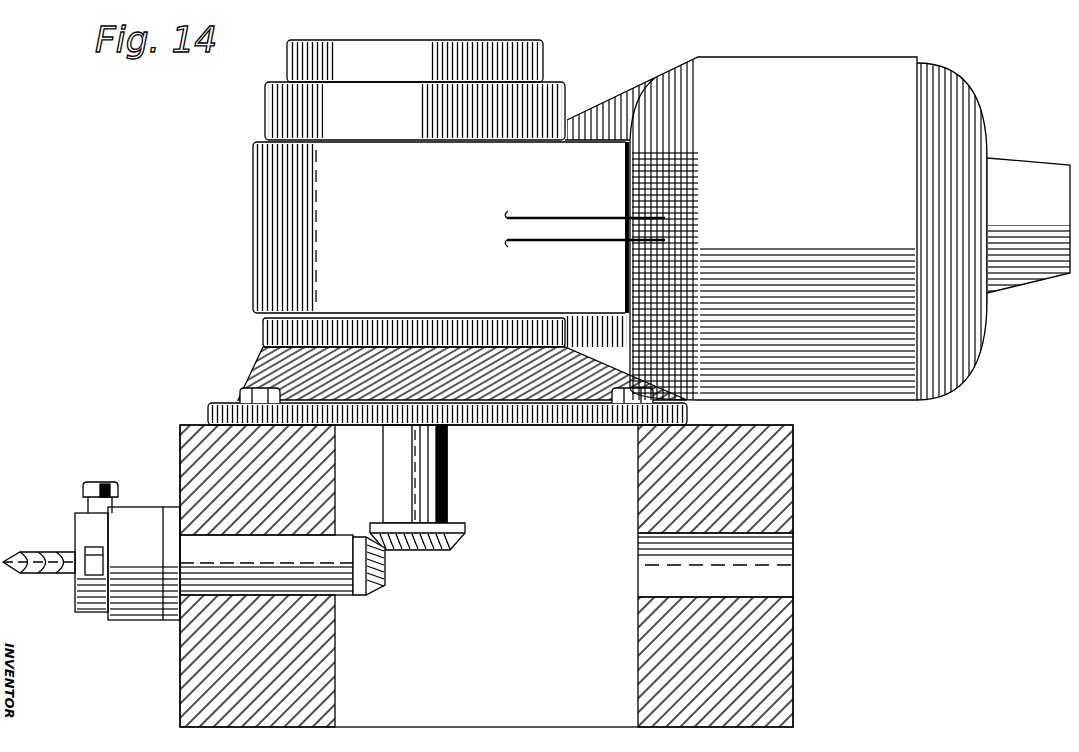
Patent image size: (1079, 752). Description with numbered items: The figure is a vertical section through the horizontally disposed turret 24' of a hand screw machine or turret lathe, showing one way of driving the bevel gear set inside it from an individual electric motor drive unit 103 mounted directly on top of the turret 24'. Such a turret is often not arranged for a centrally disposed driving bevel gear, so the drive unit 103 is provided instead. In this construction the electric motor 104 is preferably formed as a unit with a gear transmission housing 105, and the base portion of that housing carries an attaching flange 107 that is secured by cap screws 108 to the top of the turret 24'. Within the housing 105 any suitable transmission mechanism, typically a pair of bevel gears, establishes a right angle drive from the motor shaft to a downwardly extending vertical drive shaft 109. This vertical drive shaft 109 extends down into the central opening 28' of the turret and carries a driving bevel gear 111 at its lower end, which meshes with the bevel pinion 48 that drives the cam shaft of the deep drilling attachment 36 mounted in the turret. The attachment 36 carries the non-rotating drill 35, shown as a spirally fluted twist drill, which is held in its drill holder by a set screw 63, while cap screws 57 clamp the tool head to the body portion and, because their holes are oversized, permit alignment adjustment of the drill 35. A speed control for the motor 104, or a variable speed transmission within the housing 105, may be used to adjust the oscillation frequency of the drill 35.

The electric motor drive unit 103 is at (240, 158).
The electric motor 104 is at (793, 102).
The gear transmission housing 105 is at (303, 243).
The attaching flange 107 is at (424, 405).
The cap screws 108 is at (255, 392).
The vertical drive shaft 109 is at (432, 473).
The driving bevel gear 111 is at (455, 546).
The bevel pinion 48 is at (376, 592).
The turret 24' is at (456, 565).
The central opening 28' is at (678, 576).
The deep drilling attachment 36 is at (73, 511).
The set screw 63 is at (116, 482).
The drill 35 is at (50, 553).
The cap screws 57 is at (74, 596).